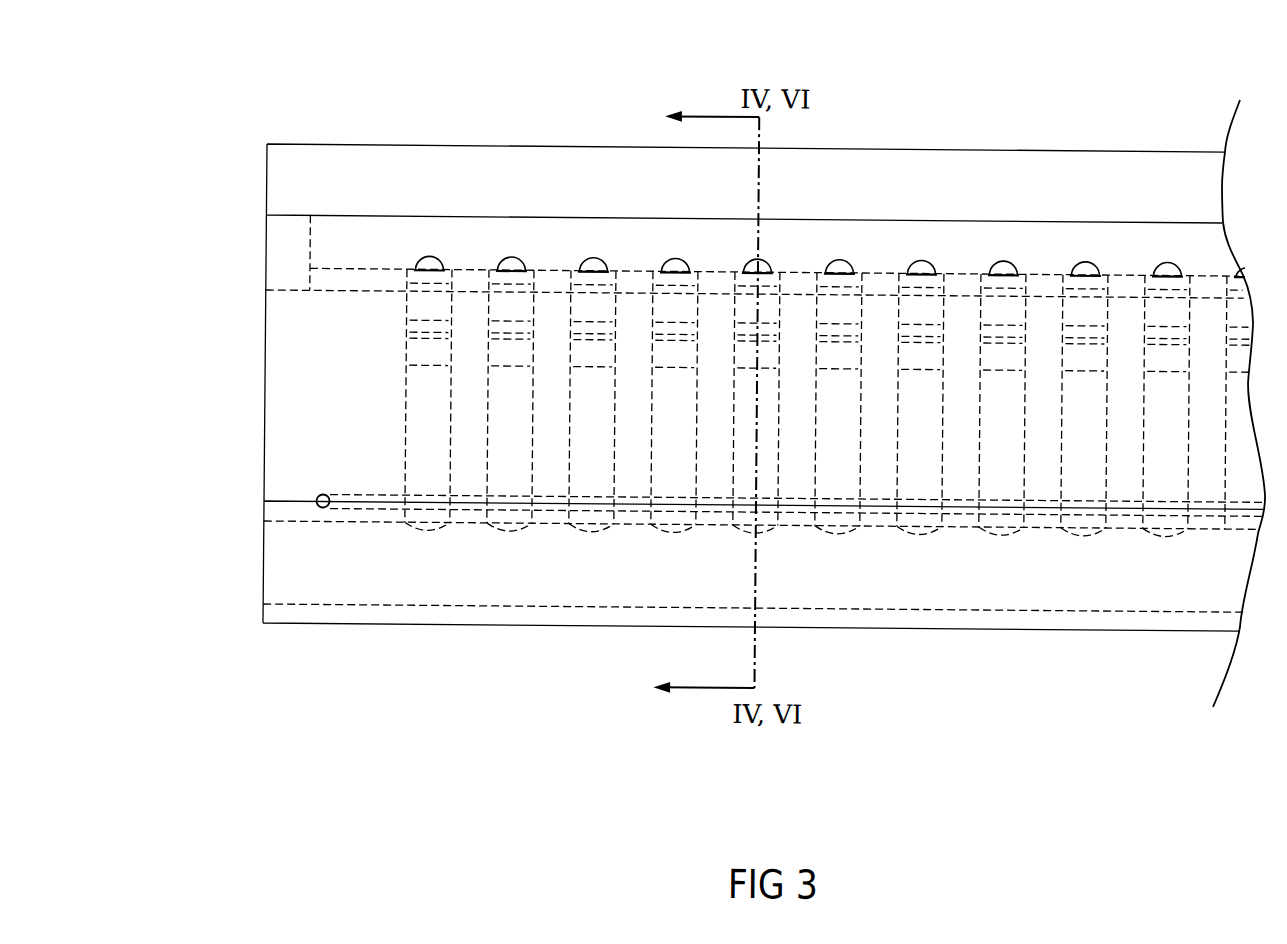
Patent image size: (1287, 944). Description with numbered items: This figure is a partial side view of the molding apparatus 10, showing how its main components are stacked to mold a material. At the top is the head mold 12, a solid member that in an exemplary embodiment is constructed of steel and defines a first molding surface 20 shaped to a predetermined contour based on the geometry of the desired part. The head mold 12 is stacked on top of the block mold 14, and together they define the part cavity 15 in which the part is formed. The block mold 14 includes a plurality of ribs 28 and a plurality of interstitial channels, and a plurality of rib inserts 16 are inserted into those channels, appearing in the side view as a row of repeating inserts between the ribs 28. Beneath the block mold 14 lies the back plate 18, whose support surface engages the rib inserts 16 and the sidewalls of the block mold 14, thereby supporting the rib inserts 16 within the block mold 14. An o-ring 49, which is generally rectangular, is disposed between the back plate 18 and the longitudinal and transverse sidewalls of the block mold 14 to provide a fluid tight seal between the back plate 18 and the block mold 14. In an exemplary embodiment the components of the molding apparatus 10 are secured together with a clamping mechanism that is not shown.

The molding apparatus 10 is at (287, 68).
The head mold 12 is at (280, 183).
The block mold 14 is at (275, 395).
The part cavity 15 is at (556, 281).
The rib inserts 16 is at (430, 480).
The back plate 18 is at (282, 562).
The first molding surface 20 is at (366, 267).
The ribs 28 is at (553, 479).
The o-ring 49 is at (320, 498).